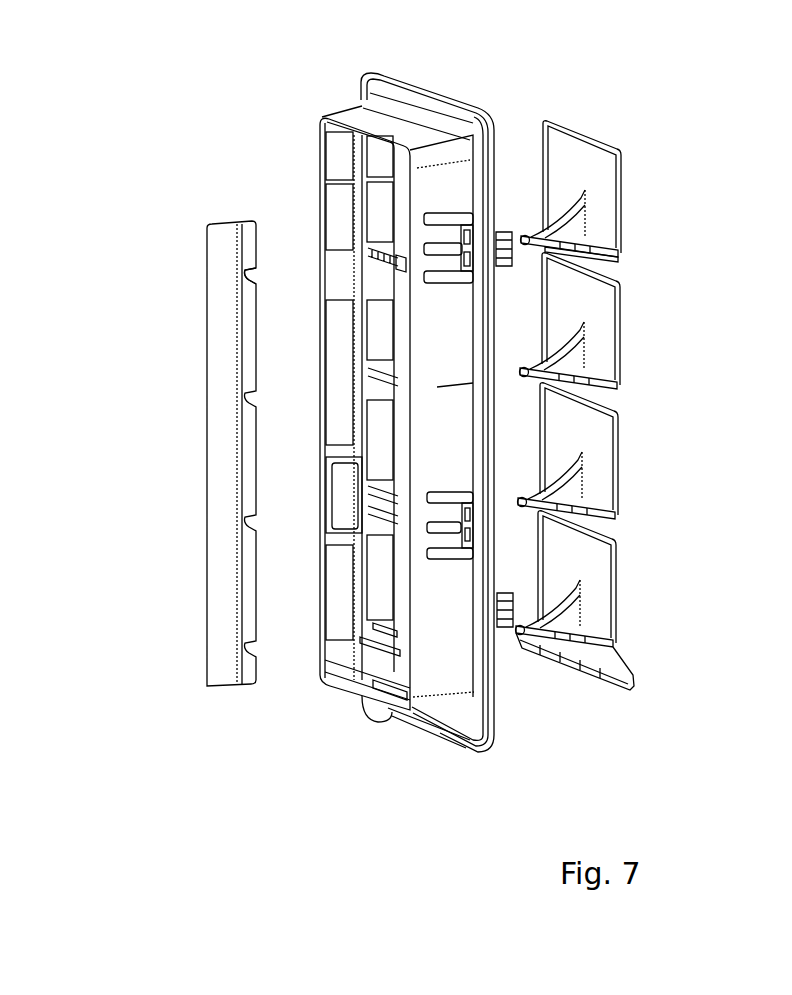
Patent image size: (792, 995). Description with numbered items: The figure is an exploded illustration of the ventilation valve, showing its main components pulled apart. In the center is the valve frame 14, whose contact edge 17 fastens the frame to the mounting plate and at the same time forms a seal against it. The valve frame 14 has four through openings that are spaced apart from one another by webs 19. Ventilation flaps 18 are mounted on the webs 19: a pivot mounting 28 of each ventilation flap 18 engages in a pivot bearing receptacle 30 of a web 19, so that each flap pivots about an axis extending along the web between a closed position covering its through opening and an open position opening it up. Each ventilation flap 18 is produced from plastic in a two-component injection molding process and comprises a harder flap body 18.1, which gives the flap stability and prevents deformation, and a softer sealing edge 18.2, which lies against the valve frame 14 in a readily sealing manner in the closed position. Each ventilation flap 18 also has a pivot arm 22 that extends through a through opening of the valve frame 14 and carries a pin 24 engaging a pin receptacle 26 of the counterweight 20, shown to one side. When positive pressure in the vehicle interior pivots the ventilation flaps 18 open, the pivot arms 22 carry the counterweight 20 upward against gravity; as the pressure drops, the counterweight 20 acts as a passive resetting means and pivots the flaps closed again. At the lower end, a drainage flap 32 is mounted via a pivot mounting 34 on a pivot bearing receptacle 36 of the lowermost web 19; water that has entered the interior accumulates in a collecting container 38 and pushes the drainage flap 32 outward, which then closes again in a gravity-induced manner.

The valve frame 14 is at (362, 115).
The contact edge 17 is at (413, 100).
The ventilation flap 18 is at (623, 184).
The flap body 18.1 is at (603, 463).
The sealing edge 18.2 is at (617, 405).
The web 19 is at (400, 266).
The counterweight 20 is at (217, 248).
The pivot arm 22 is at (577, 227).
The pin 24 is at (550, 247).
The pin receptacle 26 is at (250, 267).
The pivot mounting 28 is at (607, 258).
The pivot bearing receptacle 30 is at (402, 262).
The drainage flap 32 is at (623, 677).
The pivot mounting 34 is at (610, 647).
The pivot bearing receptacle 36 is at (373, 647).
The collecting container 38 is at (392, 680).